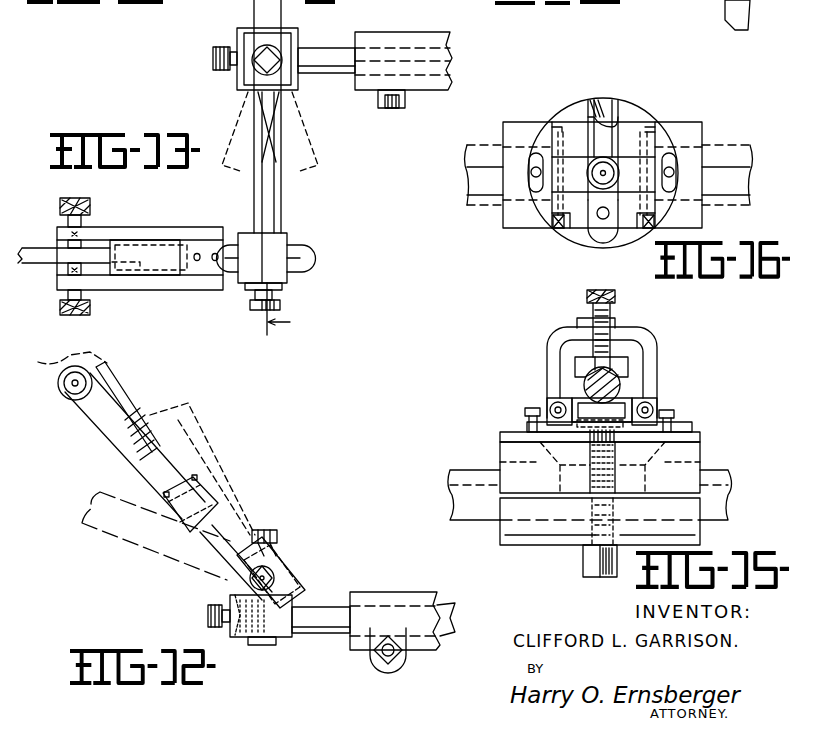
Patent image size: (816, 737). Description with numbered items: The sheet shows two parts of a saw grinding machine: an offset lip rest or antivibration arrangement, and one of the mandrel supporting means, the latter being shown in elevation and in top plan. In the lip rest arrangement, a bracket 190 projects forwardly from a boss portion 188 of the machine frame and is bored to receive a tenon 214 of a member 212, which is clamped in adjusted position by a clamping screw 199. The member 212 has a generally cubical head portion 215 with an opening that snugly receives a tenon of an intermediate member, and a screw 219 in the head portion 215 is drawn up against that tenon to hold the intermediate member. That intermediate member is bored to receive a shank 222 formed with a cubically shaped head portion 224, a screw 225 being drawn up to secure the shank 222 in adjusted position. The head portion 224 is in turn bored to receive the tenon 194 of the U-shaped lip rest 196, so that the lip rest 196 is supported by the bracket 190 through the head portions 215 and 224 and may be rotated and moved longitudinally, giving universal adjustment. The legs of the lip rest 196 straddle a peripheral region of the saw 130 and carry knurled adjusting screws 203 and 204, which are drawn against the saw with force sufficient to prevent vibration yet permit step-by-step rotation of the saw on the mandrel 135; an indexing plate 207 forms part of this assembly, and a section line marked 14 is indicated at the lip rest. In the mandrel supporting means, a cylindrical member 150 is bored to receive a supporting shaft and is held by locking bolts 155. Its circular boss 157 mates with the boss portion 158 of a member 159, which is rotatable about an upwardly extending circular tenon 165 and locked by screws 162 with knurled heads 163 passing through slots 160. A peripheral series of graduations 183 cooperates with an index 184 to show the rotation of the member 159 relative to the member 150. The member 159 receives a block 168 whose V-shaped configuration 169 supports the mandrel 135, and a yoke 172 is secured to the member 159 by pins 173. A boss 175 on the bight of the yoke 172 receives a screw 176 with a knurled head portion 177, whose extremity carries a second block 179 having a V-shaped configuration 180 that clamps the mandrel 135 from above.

In FIG. 13, the section line 14 is at (300, 319).
In FIG. 13, the saw 130 is at (46, 262).
In FIG. 16, the mandrel 135 is at (598, 218).
In FIG. 15, the mandrel 135 is at (630, 388).
In FIG. 15, the cylindrical member 150 is at (700, 500).
In FIG. 16, the locking bolts 155 is at (596, 258).
In FIG. 15, the locking bolts 155 is at (583, 568).
In FIG. 15, the circular boss 157 is at (685, 455).
In FIG. 15, the boss portion 158 is at (700, 445).
In FIG. 16, the member 159 is at (553, 112).
In FIG. 15, the member 159 is at (517, 414).
In FIG. 16, the slots 160 is at (540, 196).
In FIG. 15, the locking screws 162 is at (458, 490).
In FIG. 16, the knurled heads 163 is at (529, 172).
In FIG. 15, the knurled heads 163 is at (533, 408).
In FIG. 15, the circular tenon 165 is at (515, 432).
In FIG. 15, the block 168 is at (622, 394).
In FIG. 16, the V-shaped configuration 169 is at (592, 117).
In FIG. 16, the yoke 172 is at (600, 157).
In FIG. 15, the yoke 172 is at (570, 347).
In FIG. 16, the pins 173 is at (566, 220).
In FIG. 15, the pins 173 is at (553, 404).
In FIG. 15, the boss 175 is at (625, 330).
In FIG. 15, the screw 176 is at (622, 315).
In FIG. 16, the knurled head portion 177 is at (615, 165).
In FIG. 15, the knurled head portion 177 is at (616, 296).
In FIG. 15, the second block 179 is at (585, 360).
In FIG. 15, the V-shaped configuration 180 is at (588, 373).
In FIG. 15, the graduations 183 is at (590, 432).
In FIG. 15, the index 184 is at (602, 455).
In FIG. 16, the boss portion 188 is at (725, 12).
In FIG. 13, the bracket 190 is at (389, 34).
In FIG. 12, the bracket 190 is at (378, 598).
In FIG. 13, the tenon 194 is at (305, 259).
In FIG. 12, the tenon 194 is at (227, 553).
In FIG. 13, the lip rest 196 is at (160, 291).
In FIG. 12, the lip rest 196 is at (165, 458).
In FIG. 13, the clamping screw 199 is at (404, 100).
In FIG. 12, the clamping screw 199 is at (380, 672).
In FIG. 13, the adjusting screw 203 is at (88, 200).
In FIG. 13, the adjusting screw 204 is at (90, 308).
In FIG. 12, the adjusting screw 204 is at (68, 395).
In FIG. 13, the indexing plate 207 is at (150, 252).
In FIG. 12, the indexing plate 207 is at (110, 378).
In FIG. 13, the member 212 is at (232, 83).
In FIG. 12, the member 212 is at (237, 637).
In FIG. 13, the tenon 214 is at (323, 48).
In FIG. 12, the tenon 214 is at (312, 634).
In FIG. 13, the head portion 215 is at (238, 33).
In FIG. 13, the screw 219 is at (213, 58).
In FIG. 12, the screw 219 is at (208, 613).
In FIG. 13, the shank 222 is at (272, 165).
In FIG. 13, the head portion 224 is at (285, 242).
In FIG. 12, the screw 225 is at (263, 532).